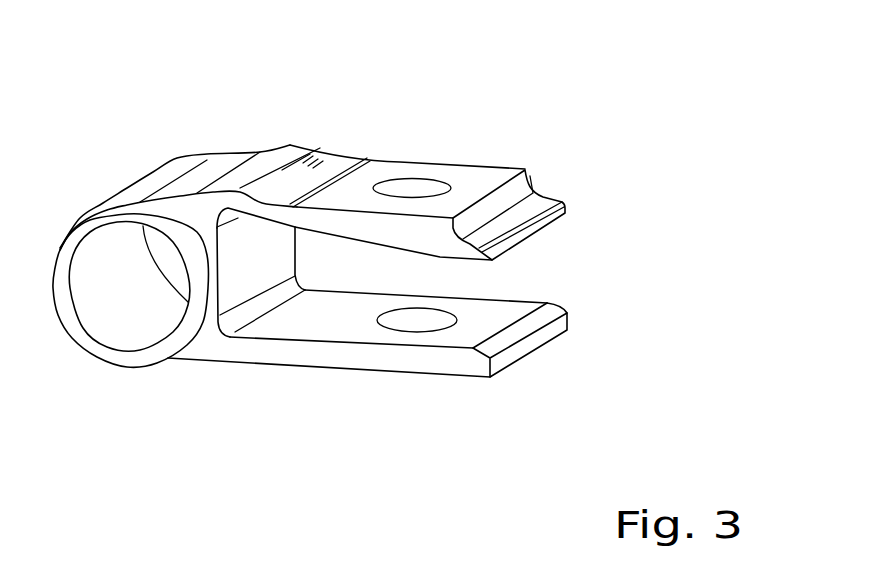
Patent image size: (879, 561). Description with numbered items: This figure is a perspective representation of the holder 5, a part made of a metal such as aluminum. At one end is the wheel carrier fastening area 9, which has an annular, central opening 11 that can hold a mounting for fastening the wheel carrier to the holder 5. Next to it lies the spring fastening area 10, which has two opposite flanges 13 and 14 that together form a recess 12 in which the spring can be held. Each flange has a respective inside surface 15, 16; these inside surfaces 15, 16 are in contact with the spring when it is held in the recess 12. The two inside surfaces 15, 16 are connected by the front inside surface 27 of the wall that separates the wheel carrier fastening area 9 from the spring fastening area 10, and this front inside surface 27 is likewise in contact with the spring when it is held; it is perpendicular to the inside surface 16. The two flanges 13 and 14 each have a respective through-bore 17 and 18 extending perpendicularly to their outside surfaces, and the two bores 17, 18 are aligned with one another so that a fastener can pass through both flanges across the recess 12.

The holder 5 is at (241, 136).
The wheel carrier fastening area 9 is at (82, 333).
The central opening 11 is at (151, 318).
The front inside surface 27 is at (247, 267).
The flange 14 is at (467, 180).
The through-bore 17 is at (402, 185).
The inside surface 15 is at (412, 252).
The spring fastening area 10 is at (522, 195).
The recess 12 is at (513, 268).
The inside surface 16 is at (347, 320).
The through-bore 18 is at (433, 321).
The flange 13 is at (440, 358).